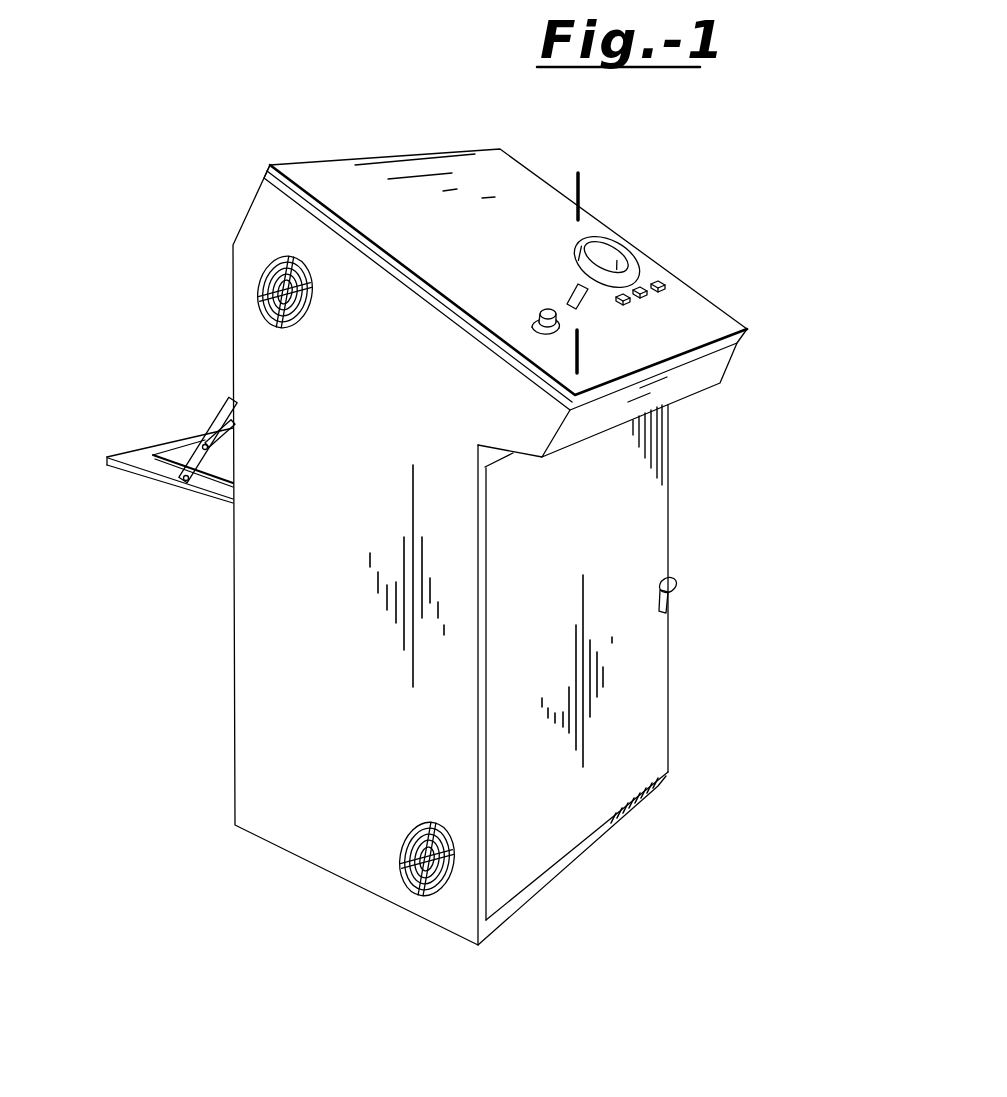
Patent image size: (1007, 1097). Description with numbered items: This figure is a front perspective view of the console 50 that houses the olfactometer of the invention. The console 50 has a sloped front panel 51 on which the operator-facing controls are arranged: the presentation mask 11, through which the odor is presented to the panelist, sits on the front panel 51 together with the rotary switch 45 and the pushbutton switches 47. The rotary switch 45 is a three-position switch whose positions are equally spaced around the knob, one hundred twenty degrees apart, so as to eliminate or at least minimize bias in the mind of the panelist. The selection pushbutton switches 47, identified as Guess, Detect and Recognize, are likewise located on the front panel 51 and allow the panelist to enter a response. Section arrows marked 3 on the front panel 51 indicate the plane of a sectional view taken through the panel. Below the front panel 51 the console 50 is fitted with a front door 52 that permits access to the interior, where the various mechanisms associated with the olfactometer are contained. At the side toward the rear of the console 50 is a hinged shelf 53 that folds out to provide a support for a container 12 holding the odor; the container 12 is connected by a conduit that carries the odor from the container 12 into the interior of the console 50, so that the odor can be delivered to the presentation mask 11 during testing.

The section line 3- 3 is at (569, 187).
The presentation mask 11 is at (617, 250).
The container 12 is at (178, 447).
The rotary switch 45 is at (530, 323).
The pushbutton switches 47 is at (668, 281).
The console 50 is at (740, 303).
The front panel 51 is at (476, 170).
The front door 52 is at (658, 563).
The hinged shelf 53 is at (132, 473).